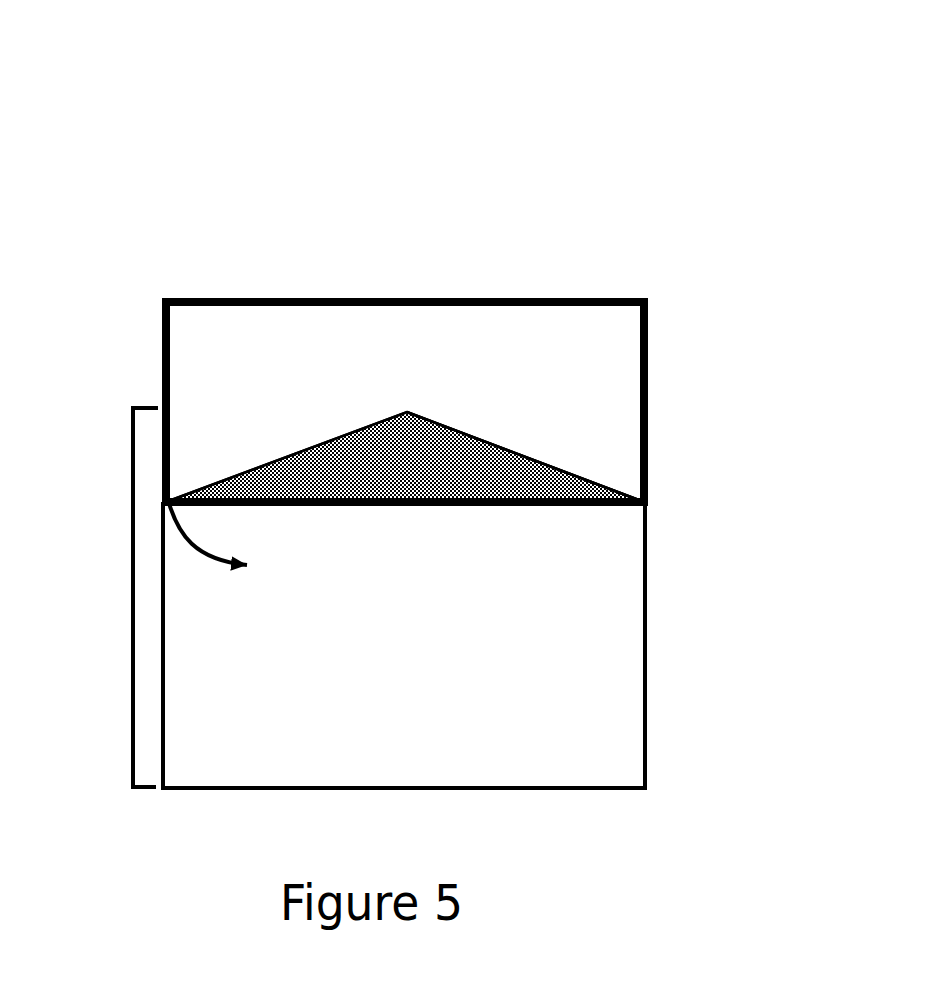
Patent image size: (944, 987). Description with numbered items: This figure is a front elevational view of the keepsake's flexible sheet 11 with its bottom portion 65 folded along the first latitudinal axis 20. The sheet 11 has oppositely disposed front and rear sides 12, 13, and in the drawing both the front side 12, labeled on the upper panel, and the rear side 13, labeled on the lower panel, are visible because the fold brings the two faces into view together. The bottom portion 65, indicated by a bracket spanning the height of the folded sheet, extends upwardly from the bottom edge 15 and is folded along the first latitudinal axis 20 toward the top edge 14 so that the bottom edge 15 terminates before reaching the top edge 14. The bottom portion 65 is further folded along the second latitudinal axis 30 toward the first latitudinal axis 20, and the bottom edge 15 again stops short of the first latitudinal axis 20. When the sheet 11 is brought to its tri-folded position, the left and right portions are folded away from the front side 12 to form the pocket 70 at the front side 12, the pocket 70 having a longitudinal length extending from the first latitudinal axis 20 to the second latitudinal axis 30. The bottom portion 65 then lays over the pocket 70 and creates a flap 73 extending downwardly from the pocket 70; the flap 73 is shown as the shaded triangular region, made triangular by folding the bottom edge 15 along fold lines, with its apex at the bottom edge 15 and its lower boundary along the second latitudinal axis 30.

The flexible sheet 11 is at (404, 441).
The front side 12 is at (549, 377).
The rear side 13 is at (439, 687).
The top edge 14 is at (518, 293).
The bottom edge 15 is at (407, 410).
The first latitudinal axis 20 is at (607, 792).
The second latitudinal axis 30 is at (557, 498).
The bottom portion 65 is at (133, 599).
The pocket 70 is at (168, 500).
The flap 73 is at (322, 473).